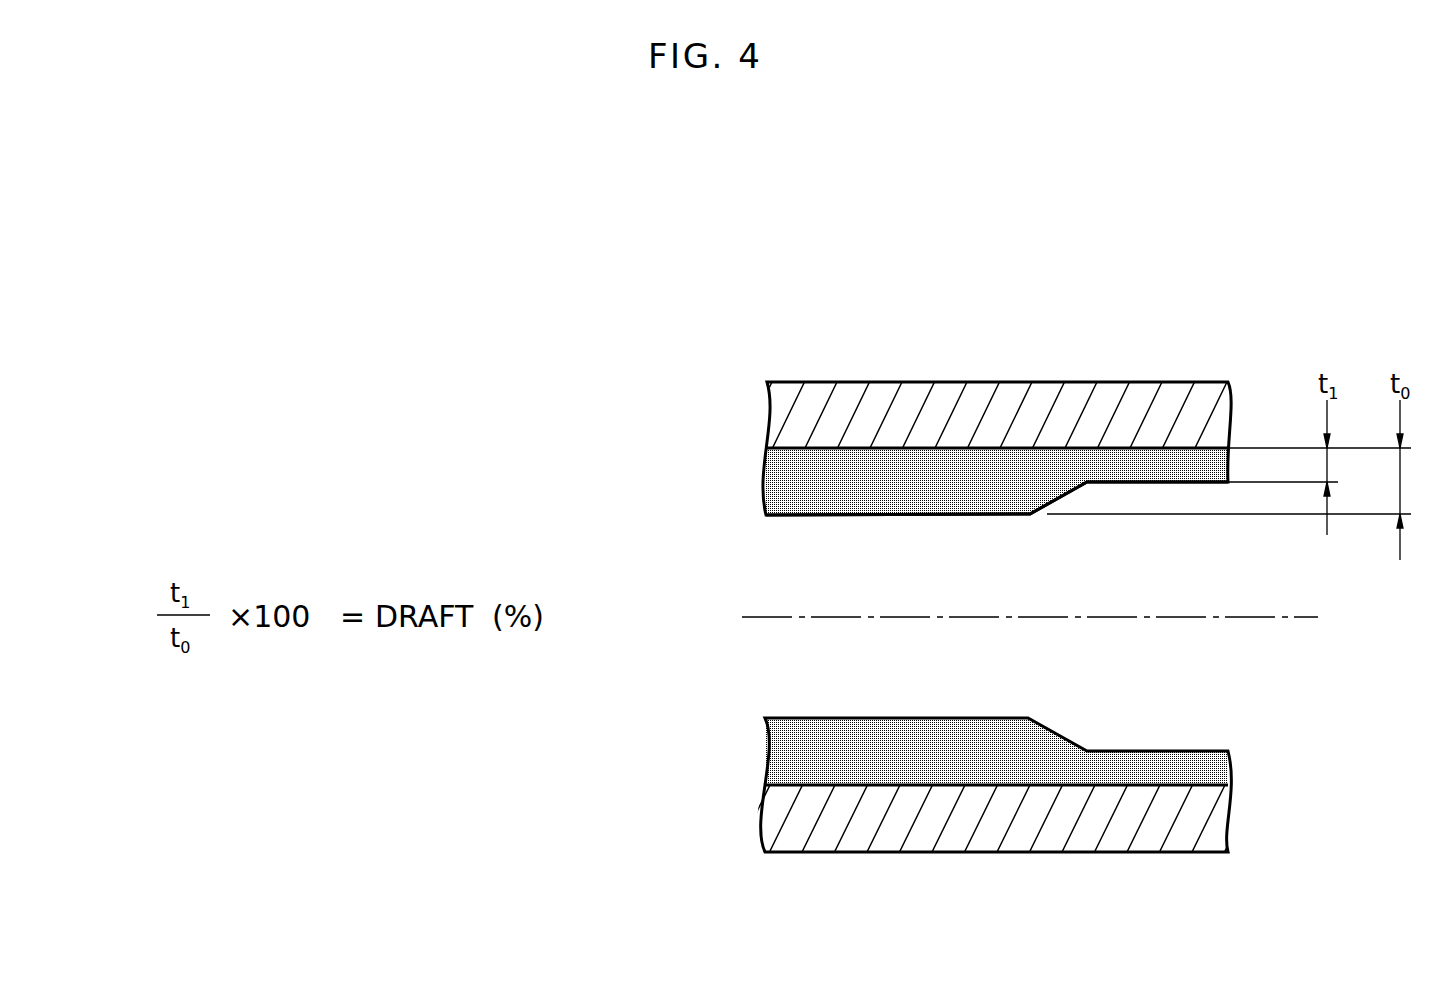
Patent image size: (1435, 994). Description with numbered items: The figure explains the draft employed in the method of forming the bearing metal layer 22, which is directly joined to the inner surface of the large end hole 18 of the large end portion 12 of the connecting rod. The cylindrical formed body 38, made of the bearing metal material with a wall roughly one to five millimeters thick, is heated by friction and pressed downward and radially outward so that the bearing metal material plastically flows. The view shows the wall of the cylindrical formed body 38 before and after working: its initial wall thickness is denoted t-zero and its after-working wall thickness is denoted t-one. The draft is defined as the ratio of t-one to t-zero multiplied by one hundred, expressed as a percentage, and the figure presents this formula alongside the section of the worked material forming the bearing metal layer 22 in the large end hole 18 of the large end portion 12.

The large end portion 12 is at (1112, 382).
The large end hole 18 is at (920, 516).
The cylindrical formed body 38 is at (958, 448).
The bearing metal layer 22 is at (1213, 772).